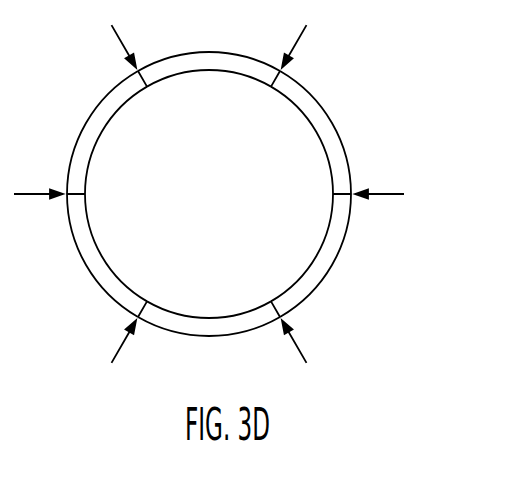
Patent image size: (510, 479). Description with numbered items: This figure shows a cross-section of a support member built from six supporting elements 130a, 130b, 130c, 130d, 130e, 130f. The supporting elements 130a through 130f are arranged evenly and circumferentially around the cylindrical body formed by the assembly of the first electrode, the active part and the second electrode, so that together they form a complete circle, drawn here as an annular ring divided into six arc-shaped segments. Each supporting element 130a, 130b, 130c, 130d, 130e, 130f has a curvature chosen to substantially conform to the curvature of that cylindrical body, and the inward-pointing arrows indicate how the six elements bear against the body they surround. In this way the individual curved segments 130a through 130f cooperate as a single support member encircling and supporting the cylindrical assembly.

The supporting element 130a is at (115, 105).
The supporting element 130b is at (99, 268).
The supporting element 130c is at (207, 325).
The supporting element 130d is at (300, 285).
The supporting element 130e is at (318, 123).
The supporting element 130f is at (217, 63).